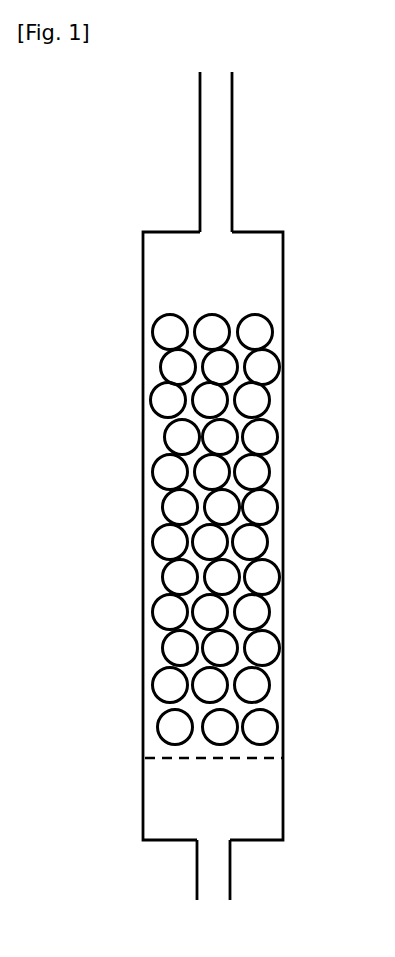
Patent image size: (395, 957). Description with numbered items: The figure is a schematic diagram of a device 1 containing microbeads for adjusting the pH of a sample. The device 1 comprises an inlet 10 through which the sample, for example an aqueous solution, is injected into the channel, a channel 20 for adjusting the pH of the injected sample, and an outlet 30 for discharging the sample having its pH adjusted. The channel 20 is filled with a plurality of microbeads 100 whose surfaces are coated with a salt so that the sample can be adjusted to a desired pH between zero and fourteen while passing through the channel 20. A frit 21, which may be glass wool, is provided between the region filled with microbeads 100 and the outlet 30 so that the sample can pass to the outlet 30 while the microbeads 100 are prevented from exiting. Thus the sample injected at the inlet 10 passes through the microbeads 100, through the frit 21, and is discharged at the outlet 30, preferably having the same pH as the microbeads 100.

The device containing microbeads 1 is at (112, 151).
The inlet 10 is at (233, 178).
The channel 20 is at (264, 266).
The frit 21 is at (253, 797).
The outlet 30 is at (222, 870).
The microbeads 100 is at (155, 525).